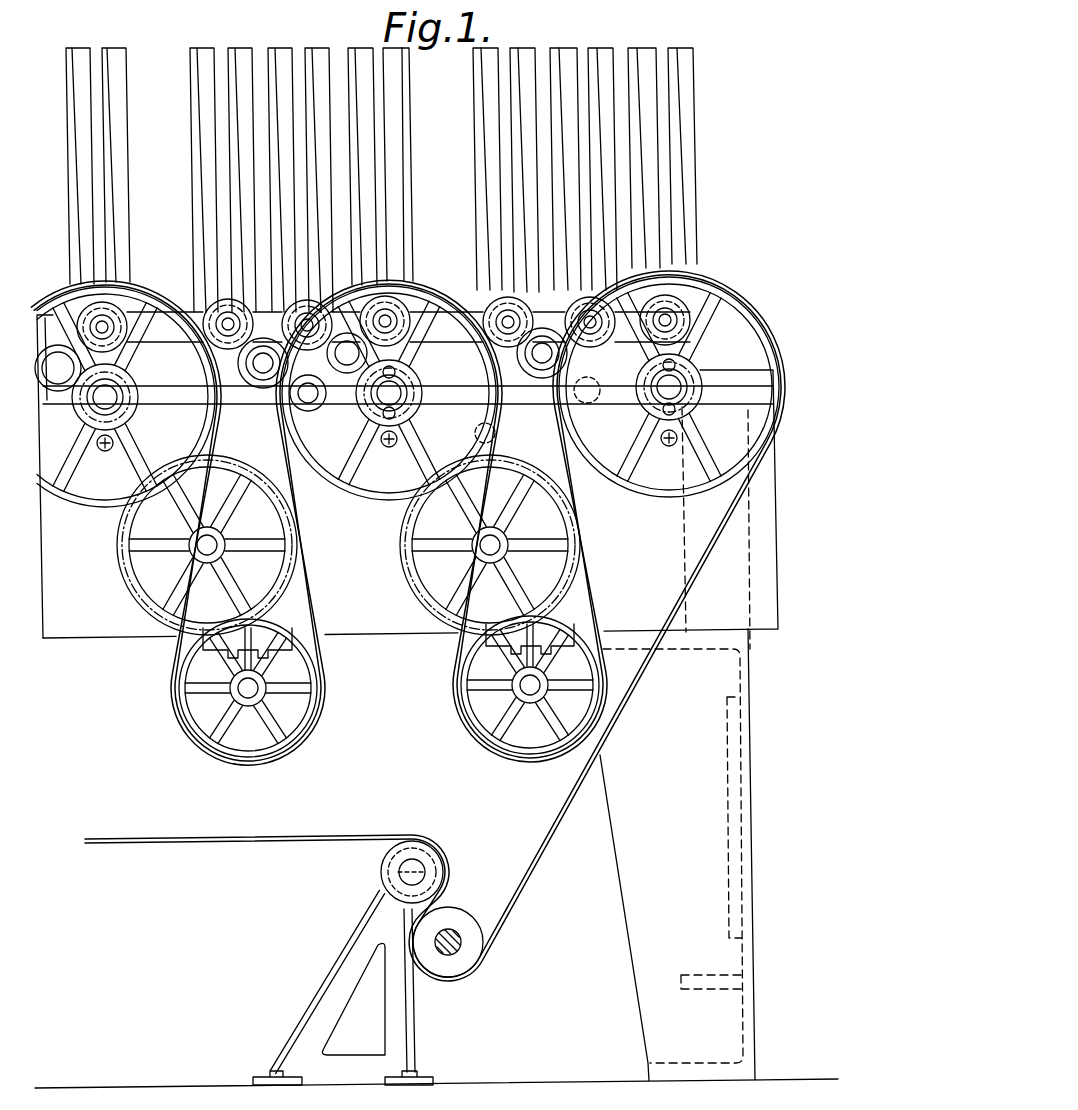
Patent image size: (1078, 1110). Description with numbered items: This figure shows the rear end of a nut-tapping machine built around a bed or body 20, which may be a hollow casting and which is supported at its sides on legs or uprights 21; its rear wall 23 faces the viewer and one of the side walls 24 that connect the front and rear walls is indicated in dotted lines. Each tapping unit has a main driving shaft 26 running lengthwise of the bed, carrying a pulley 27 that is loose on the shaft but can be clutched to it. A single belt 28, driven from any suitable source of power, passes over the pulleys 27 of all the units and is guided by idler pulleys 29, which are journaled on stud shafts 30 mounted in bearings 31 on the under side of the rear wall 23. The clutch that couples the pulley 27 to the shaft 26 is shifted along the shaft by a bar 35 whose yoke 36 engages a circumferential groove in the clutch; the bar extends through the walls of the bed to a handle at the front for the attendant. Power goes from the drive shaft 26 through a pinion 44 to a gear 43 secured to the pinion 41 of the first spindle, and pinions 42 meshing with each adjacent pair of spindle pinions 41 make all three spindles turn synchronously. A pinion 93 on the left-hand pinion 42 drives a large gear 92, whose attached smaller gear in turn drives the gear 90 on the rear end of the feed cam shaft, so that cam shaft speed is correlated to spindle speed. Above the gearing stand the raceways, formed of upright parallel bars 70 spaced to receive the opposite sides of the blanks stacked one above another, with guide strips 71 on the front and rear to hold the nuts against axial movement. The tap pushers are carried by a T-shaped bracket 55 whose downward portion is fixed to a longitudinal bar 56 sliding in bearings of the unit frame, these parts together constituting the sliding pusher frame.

The bed or body 20 is at (410, 475).
The legs or uprights 21 is at (436, 858).
The rear wall 23 is at (46, 648).
The side wall 24 is at (752, 565).
The main driving shaft 26 is at (98, 403).
The pulley 27 is at (92, 508).
The belt 28 is at (646, 669).
The idler pulleys 29 is at (276, 740).
The stud shafts 30 is at (240, 693).
The bearings 31 is at (208, 652).
The bar 35 is at (667, 447).
The yoke 36 is at (652, 428).
The gear or pinion 41 is at (492, 296).
The pinion 42 is at (690, 362).
The gear 43 is at (700, 272).
The pinion 44 is at (690, 411).
The T-shaped bracket 55 is at (540, 318).
The longitudinal bar 56 is at (300, 406).
The upright parallel bars 70 is at (645, 58).
The guide strips 71 is at (650, 60).
The gear 90 is at (580, 574).
The large gear 92 is at (420, 560).
The pinion 93 is at (498, 436).